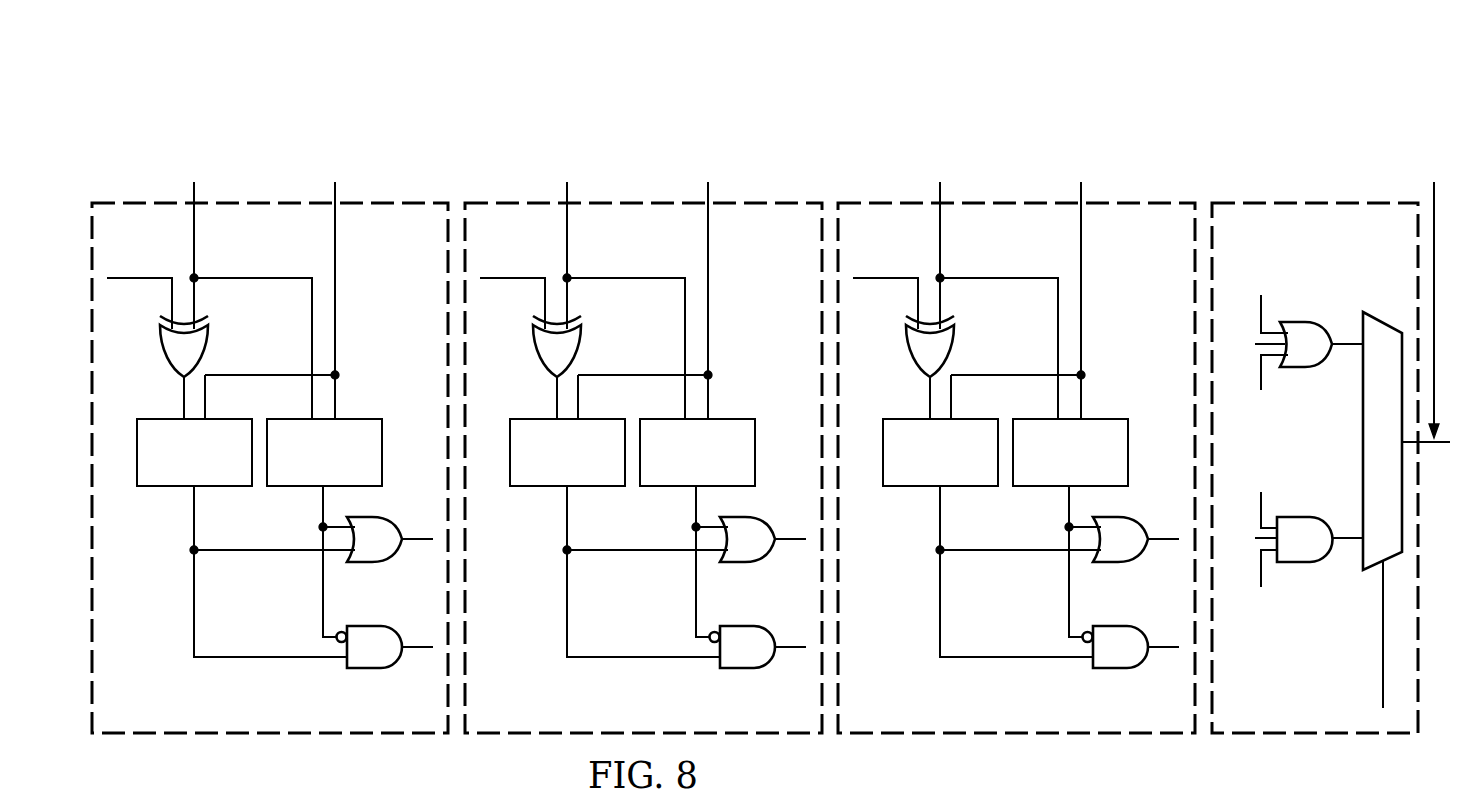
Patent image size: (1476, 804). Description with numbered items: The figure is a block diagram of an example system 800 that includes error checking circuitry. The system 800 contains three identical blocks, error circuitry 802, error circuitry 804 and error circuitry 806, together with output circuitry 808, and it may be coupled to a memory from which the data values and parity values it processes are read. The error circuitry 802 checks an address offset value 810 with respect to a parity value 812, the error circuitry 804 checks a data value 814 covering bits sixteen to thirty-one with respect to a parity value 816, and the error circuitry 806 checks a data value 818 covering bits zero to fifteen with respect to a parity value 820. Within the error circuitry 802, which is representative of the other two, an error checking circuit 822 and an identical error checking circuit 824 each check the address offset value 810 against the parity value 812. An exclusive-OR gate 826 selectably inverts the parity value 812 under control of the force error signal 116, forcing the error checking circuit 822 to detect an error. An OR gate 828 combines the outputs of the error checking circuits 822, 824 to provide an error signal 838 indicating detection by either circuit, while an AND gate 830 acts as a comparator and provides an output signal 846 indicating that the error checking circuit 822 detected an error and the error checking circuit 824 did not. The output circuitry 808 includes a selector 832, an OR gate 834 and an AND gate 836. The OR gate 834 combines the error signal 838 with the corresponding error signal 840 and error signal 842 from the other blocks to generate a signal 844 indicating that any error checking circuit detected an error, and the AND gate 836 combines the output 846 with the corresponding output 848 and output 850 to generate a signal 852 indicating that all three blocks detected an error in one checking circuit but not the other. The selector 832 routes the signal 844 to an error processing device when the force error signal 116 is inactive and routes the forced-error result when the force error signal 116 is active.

The system 800 is at (856, 84).
The error circuitry 802 is at (230, 741).
The error circuitry 804 is at (523, 741).
The error circuitry 806 is at (1033, 741).
The output circuitry 808 is at (1333, 741).
The address offset value 810 is at (335, 316).
The parity value 812 is at (312, 313).
The data value 814 is at (678, 300).
The parity value 816 is at (624, 300).
The data value 818 is at (1051, 300).
The parity value 820 is at (997, 300).
The error checking circuit 822 is at (162, 487).
The error checking circuit 824 is at (292, 487).
The exclusive-OR gate 826 is at (208, 343).
The OR gate 828 is at (373, 563).
The AND gate 830 is at (362, 669).
The selector 832 is at (1363, 455).
The OR gate 834 is at (1300, 322).
The AND gate 836 is at (1300, 563).
The error signal 838 is at (416, 542).
The error signal 840 is at (782, 554).
The error signal 842 is at (1155, 554).
The signal 844 is at (1345, 347).
The output signal 846 is at (416, 650).
The output 848 is at (781, 662).
The output 850 is at (1154, 662).
The signal 852 is at (1345, 530).
The force error signal 116 is at (140, 281).